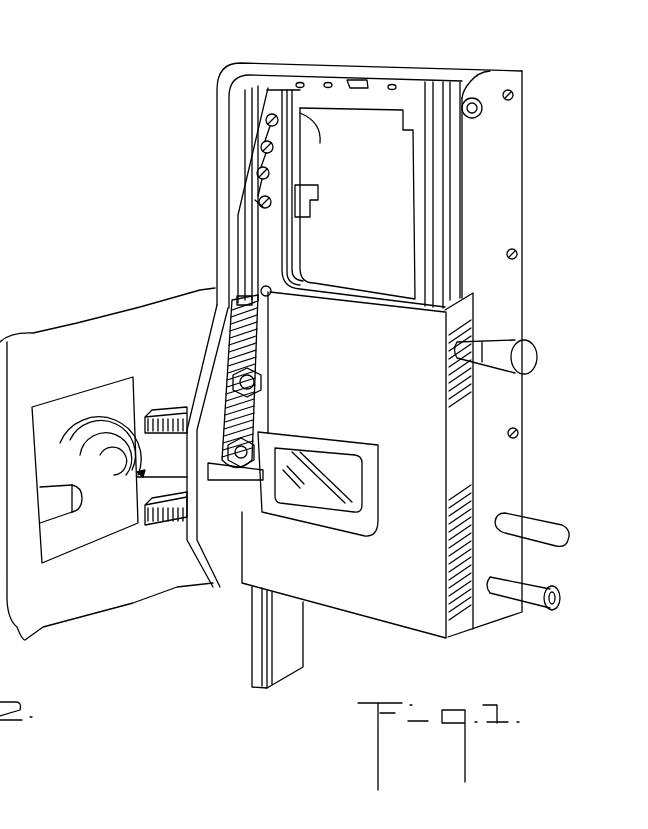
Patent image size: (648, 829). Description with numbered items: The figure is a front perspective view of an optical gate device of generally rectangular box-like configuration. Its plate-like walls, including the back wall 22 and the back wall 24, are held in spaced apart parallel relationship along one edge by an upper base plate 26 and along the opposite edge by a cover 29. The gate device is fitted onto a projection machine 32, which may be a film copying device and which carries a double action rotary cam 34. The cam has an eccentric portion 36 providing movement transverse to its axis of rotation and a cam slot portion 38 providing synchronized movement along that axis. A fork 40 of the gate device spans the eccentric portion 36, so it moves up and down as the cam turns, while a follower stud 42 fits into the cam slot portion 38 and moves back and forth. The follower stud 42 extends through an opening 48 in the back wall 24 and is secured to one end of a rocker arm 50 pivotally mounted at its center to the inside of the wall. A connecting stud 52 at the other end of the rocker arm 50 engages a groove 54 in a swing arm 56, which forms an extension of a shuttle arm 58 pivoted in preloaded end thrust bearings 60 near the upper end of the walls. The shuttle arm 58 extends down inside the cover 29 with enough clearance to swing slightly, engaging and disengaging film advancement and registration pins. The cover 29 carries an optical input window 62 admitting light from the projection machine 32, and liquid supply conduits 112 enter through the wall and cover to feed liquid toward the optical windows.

The back wall 22 is at (500, 146).
The back wall 24 is at (217, 123).
The upper base plate 26 is at (477, 70).
The cover 29 is at (383, 610).
The projection machine 32 is at (77, 342).
The double action rotary cam 34 is at (82, 515).
The eccentric portion 36 is at (117, 410).
The cam slot portion 38 is at (105, 497).
The fork 40 is at (172, 413).
The follower stud 42 is at (182, 446).
The opening 48 is at (227, 471).
The rocker arm 50 is at (243, 350).
The connecting stud 52 is at (270, 294).
The groove 54 is at (262, 291).
The swing arm 56 is at (248, 227).
The shuttle arm 58 is at (405, 108).
The preloaded end thrust bearings 60 is at (482, 110).
The optical input window 62 is at (323, 470).
The liquid supply conduits 112 is at (550, 545).